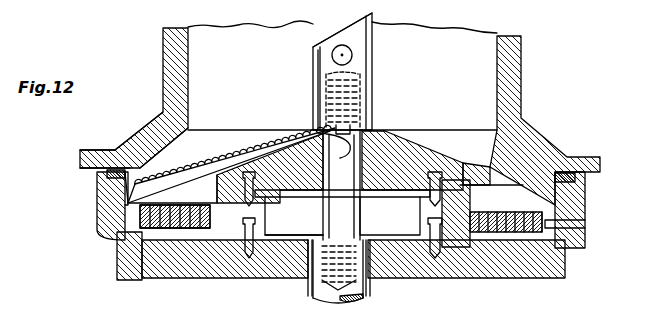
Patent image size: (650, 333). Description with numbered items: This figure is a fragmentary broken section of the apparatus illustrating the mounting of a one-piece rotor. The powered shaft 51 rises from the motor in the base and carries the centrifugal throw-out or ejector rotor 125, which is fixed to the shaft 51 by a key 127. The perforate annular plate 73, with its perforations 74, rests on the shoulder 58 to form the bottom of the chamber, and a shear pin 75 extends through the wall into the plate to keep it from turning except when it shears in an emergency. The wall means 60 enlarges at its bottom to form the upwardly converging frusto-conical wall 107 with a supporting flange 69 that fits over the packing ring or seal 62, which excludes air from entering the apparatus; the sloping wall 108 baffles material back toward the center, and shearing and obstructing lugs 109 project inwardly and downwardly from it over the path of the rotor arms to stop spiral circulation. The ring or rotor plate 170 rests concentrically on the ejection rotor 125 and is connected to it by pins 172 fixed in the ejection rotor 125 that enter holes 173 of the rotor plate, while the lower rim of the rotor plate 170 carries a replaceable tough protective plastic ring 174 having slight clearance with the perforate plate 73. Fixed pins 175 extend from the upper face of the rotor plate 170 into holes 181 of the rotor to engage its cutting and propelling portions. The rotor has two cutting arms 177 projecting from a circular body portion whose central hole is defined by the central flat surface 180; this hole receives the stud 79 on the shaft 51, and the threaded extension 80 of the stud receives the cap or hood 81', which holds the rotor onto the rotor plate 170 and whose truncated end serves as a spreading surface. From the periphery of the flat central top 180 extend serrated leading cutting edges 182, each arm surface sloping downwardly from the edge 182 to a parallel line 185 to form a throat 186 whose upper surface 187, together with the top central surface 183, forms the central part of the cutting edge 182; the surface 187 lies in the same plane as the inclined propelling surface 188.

The powered shaft 51 is at (330, 298).
The shoulder 58 is at (118, 243).
The wall means 60 is at (525, 73).
The packing ring or seal 62 is at (107, 174).
The supporting flange 69 is at (80, 158).
The perforate annular plate 73 is at (498, 211).
The perforations 74 is at (520, 220).
The shear pin 75 is at (586, 223).
The stud 79 is at (345, 222).
The threaded extension 80 is at (380, 76).
The cap or hood 81' is at (364, 71).
The frusto-conical wall 107 is at (157, 130).
The sloping wall 108 is at (178, 148).
The shearing and obstructing lugs 109 is at (140, 150).
The throw-out rotor 125 is at (422, 272).
The key 127 is at (306, 286).
The rotor plate 170 is at (268, 208).
The pins 172 is at (248, 262).
The holes 173 is at (265, 212).
The protective plastic ring 174 is at (425, 214).
The fixed pins 175 is at (225, 186).
The cutting arms 177 is at (128, 195).
The central flat surface 180 is at (372, 130).
The holes 181 is at (445, 158).
The leading cutting edges 182 is at (250, 163).
The top central surface 183 is at (426, 148).
The line 185 is at (285, 162).
The throat 186 is at (265, 152).
The upper surface 187 is at (228, 160).
The propelling surface 188 is at (125, 212).